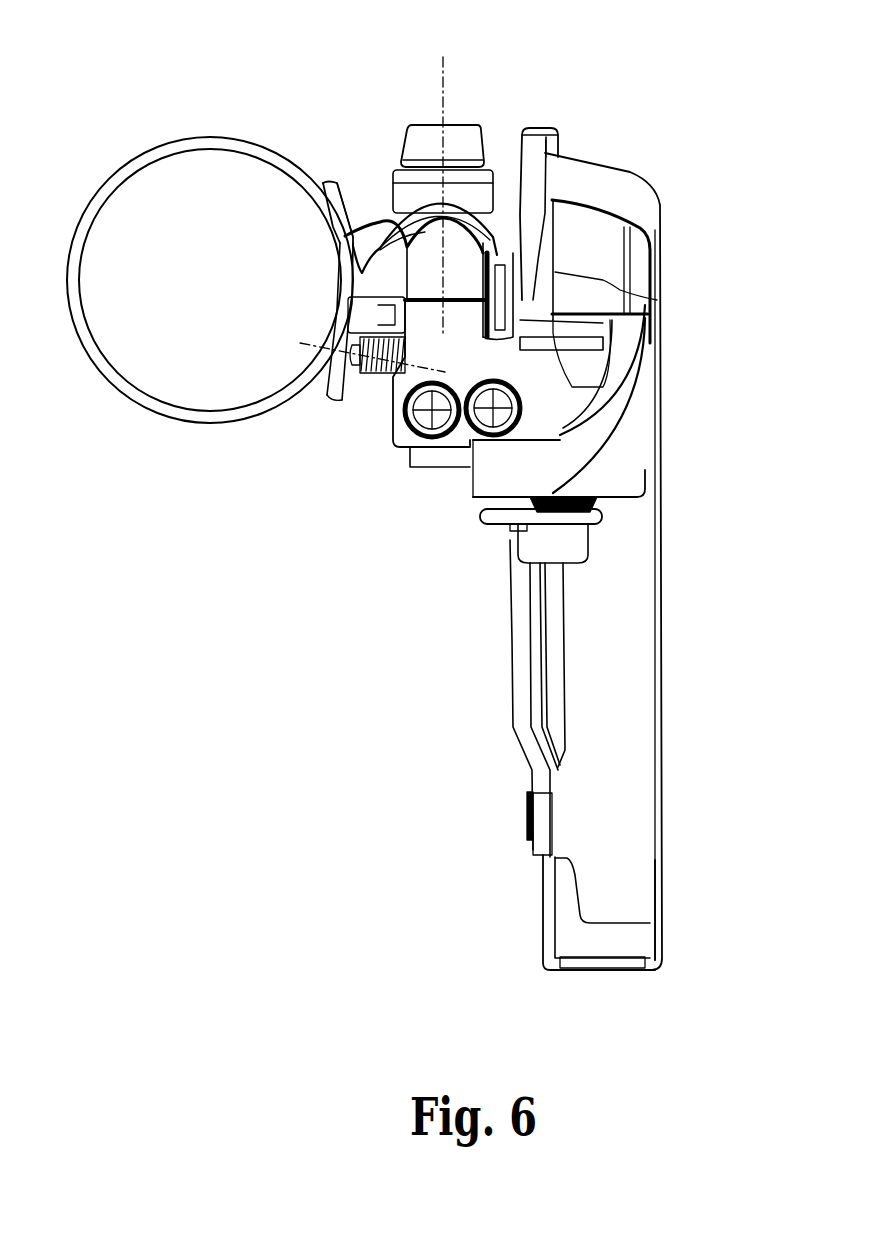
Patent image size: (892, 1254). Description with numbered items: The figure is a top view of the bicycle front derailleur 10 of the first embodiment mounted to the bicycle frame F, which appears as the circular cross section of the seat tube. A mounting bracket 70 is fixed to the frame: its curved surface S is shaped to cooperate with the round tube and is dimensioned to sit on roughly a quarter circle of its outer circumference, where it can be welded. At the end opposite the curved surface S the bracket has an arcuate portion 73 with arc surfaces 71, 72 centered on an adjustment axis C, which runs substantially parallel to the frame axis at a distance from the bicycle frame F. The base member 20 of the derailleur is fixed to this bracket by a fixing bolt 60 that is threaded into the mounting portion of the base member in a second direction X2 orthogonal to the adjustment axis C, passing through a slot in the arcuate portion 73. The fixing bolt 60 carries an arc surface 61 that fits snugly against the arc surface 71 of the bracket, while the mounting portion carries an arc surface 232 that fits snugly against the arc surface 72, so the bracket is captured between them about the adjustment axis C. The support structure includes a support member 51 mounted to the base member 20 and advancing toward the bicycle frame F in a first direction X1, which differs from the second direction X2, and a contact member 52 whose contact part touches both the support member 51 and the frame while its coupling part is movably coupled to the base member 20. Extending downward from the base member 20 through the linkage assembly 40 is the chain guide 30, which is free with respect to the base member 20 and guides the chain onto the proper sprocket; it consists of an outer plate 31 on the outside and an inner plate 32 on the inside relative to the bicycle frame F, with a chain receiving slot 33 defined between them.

The bicycle frame F is at (200, 137).
The curved surface S is at (302, 165).
The first direction X1 is at (340, 352).
The second direction X2 is at (440, 92).
The bicycle front derailleur 10 is at (665, 153).
The base member 20 is at (428, 468).
The chain guide 30 is at (598, 975).
The outer plate 31 is at (668, 808).
The inner plate 32 is at (552, 827).
The chain receiving slot 33 is at (595, 712).
The linkage assembly 40 is at (613, 462).
The support member 51 is at (386, 378).
The contact member 52 is at (348, 398).
The fixing bolt 60 is at (455, 135).
The arc surface 61 is at (410, 220).
The mounting bracket 70 is at (384, 236).
The arc surface 71 is at (470, 187).
The arc surface 72 is at (445, 263).
The arcuate portion 73 is at (378, 226).
The adjustment axis C is at (657, 300).
The arc surface 232 is at (603, 323).